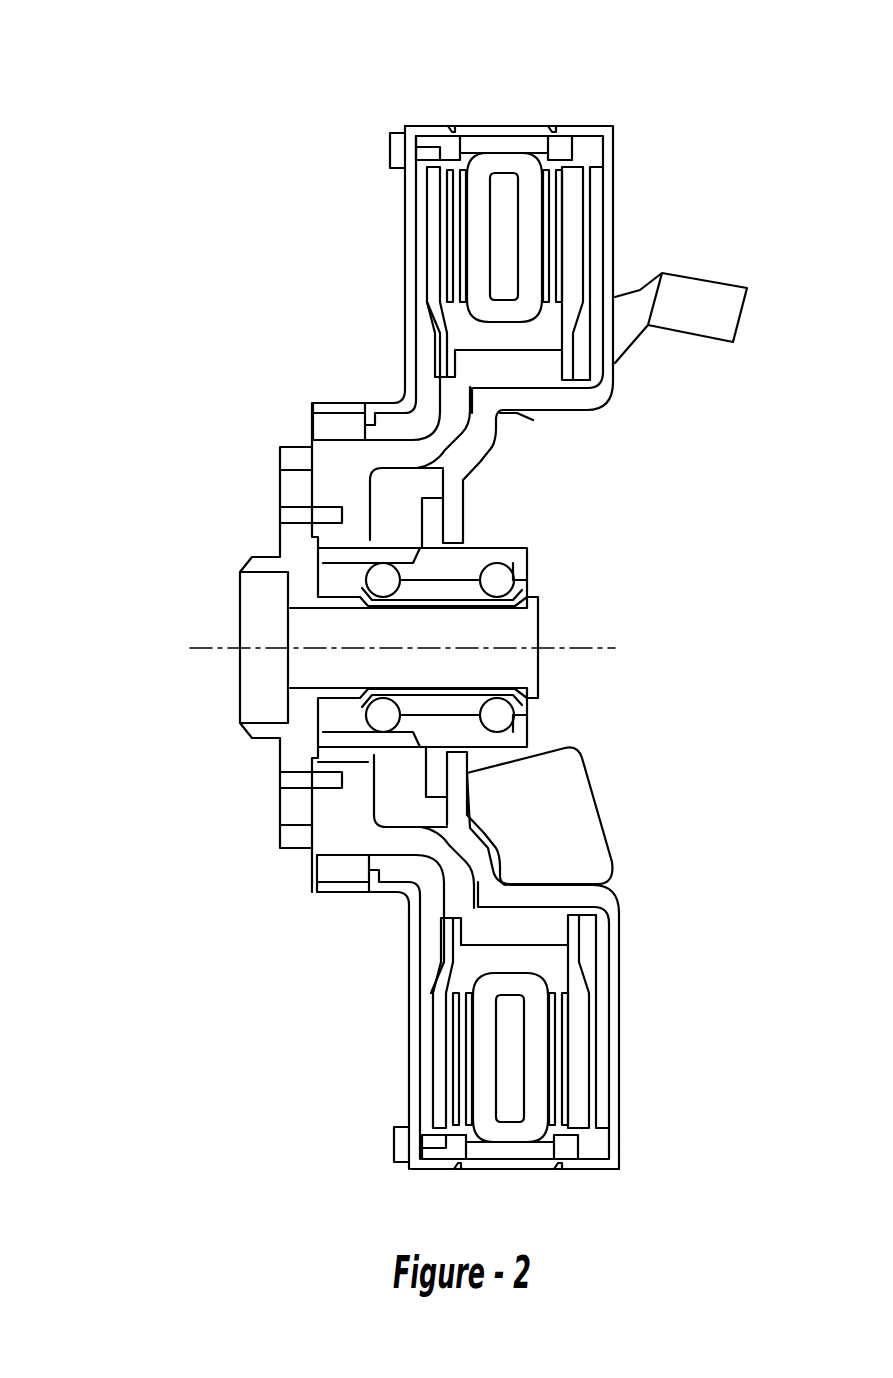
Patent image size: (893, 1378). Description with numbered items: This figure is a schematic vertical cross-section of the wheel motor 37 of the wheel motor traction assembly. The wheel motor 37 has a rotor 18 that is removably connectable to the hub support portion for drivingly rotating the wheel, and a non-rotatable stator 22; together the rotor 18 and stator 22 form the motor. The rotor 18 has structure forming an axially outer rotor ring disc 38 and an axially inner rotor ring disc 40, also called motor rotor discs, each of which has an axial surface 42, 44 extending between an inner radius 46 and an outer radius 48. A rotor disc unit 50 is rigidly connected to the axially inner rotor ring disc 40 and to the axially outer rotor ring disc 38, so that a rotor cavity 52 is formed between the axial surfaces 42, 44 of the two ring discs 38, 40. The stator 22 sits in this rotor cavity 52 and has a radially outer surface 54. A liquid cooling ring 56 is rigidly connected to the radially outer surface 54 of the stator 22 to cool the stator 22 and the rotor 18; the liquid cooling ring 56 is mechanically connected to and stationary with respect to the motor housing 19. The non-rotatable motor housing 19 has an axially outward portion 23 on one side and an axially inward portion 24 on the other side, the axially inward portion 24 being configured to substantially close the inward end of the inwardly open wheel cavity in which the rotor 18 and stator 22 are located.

The rotor 18 is at (447, 333).
The motor housing 19 is at (278, 85).
The stator 22 is at (527, 248).
The axially outward portion 23 is at (405, 210).
The axially inward portion 24 is at (613, 177).
The wheel motor 37 is at (196, 942).
The axially outer rotor ring disc 38 is at (425, 247).
The axially inner rotor ring disc 40 is at (573, 257).
The axial surface 42 is at (447, 227).
The axial surface 44 is at (567, 187).
The inner radius 46 is at (593, 380).
The outer radius 48 is at (590, 167).
The rotor disc unit 50 is at (445, 443).
The rotor cavity 52 is at (615, 317).
The radially outer surface 54 is at (473, 1140).
The liquid cooling ring 56 is at (530, 1163).